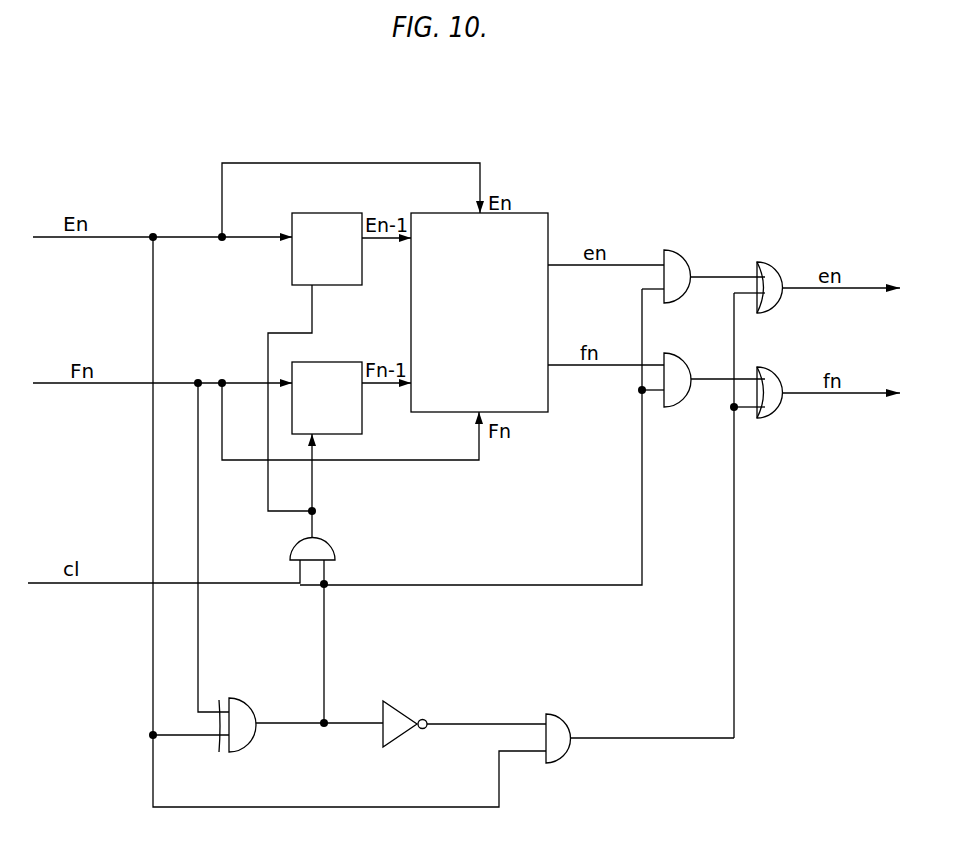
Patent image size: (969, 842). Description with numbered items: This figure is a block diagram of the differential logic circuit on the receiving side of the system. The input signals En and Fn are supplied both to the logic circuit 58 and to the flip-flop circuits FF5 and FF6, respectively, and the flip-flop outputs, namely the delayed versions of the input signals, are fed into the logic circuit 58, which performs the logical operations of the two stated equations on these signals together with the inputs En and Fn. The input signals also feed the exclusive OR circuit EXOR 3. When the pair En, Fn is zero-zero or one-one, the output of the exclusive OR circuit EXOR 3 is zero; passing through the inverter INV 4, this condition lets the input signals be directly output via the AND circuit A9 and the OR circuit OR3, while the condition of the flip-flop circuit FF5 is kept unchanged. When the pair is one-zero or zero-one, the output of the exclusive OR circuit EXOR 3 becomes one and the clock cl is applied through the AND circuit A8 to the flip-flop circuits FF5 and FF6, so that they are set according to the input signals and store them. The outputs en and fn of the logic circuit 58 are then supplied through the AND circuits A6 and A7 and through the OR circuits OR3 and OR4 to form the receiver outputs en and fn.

The logic circuit 58 is at (447, 213).
The flip-flop circuit FF5 is at (326, 262).
The flip-flop circuit FF6 is at (326, 408).
The AND circuit A6 is at (689, 269).
The AND circuit A7 is at (689, 371).
The AND circuit A8 is at (332, 551).
The AND circuit A9 is at (571, 735).
The OR circuit OR3 is at (782, 275).
The OR circuit OR4 is at (782, 383).
The exclusive OR circuit EXOR3 is at (241, 742).
The inverter INV4 is at (422, 719).